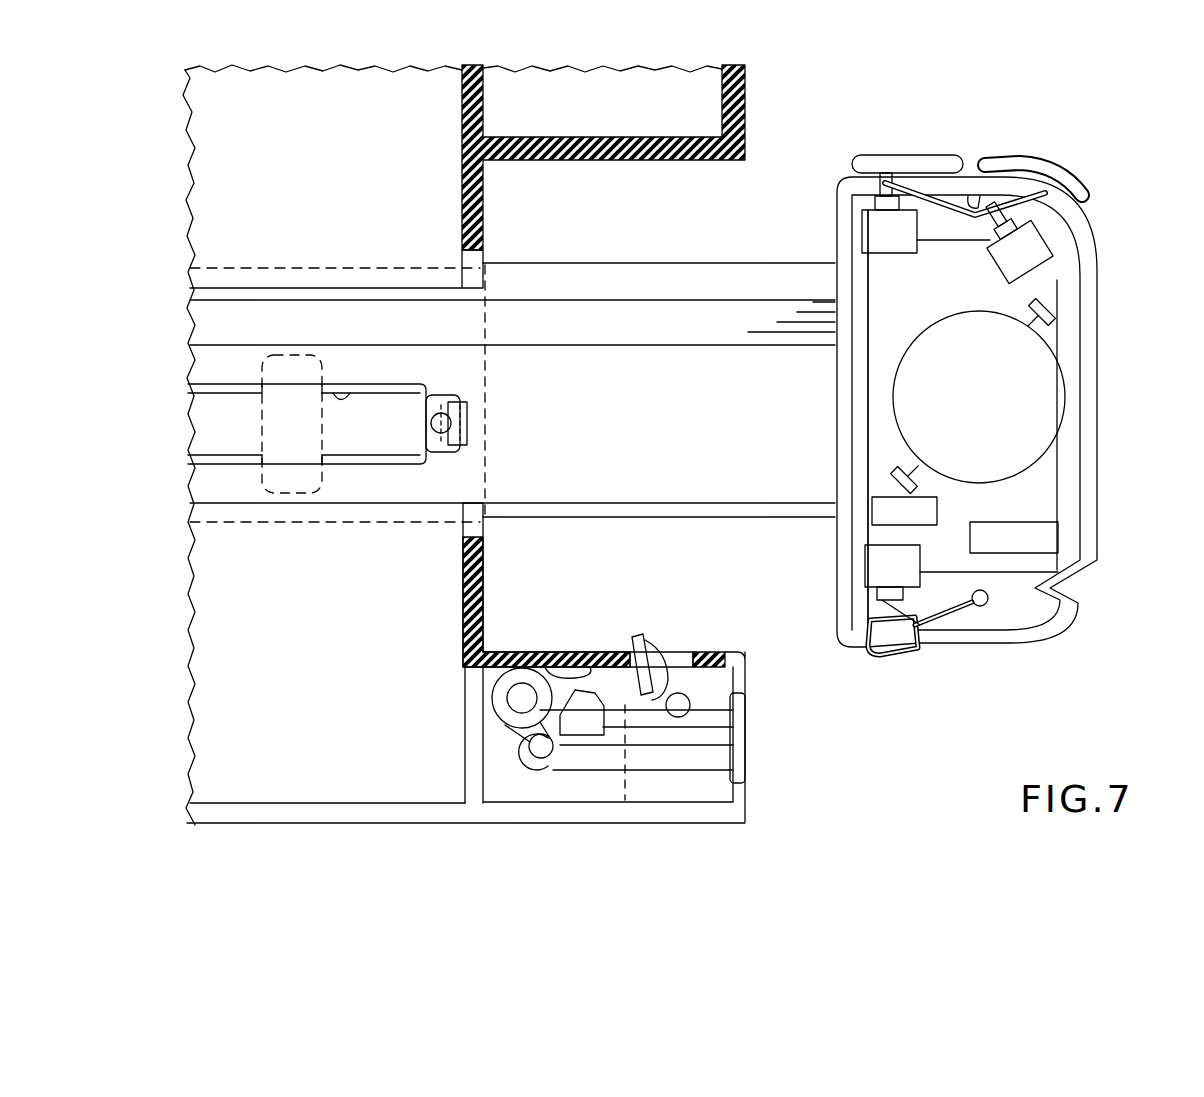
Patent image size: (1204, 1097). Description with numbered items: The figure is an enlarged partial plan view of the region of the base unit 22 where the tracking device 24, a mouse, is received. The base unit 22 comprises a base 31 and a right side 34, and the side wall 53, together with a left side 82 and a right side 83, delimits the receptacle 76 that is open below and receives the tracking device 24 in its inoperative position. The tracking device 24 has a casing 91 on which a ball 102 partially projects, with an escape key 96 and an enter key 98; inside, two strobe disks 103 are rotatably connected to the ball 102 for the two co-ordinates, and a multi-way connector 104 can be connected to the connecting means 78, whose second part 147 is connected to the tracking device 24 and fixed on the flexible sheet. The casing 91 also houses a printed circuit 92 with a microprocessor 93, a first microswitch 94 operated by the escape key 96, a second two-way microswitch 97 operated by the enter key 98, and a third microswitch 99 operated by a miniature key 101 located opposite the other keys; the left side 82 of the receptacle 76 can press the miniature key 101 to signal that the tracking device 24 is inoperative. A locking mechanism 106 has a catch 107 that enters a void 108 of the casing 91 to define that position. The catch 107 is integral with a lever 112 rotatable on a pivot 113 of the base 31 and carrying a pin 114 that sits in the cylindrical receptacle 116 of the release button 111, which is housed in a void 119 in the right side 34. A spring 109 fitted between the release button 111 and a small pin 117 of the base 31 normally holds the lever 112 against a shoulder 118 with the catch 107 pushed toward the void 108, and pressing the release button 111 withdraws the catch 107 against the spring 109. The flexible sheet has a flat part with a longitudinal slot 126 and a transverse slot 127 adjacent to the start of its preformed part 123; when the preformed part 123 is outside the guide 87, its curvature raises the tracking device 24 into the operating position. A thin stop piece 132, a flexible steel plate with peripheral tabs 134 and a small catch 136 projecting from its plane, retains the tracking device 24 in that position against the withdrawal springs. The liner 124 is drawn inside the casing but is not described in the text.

The base unit 22 is at (297, 823).
The tracking device 24 is at (1102, 177).
The base 31 is at (360, 790).
The right side 34 is at (746, 95).
The side wall 53 is at (463, 607).
The receptacle 76 is at (712, 652).
The connecting means 78 is at (238, 300).
The left side 82 is at (568, 652).
The right side 83 is at (612, 160).
The guide 87 is at (379, 504).
The casing 91 is at (1095, 482).
The printed circuit 92 is at (1055, 280).
The microprocessor 93 is at (1060, 536).
The first microswitch 94 is at (880, 230).
The escape key 96 is at (898, 172).
The second two-way microswitch 97 is at (1040, 260).
The enter key 98 is at (1020, 165).
The third microswitch 99 is at (880, 575).
The miniature key 101 is at (920, 655).
The ball 102 is at (1030, 353).
The strobe disks 103 is at (1050, 318).
The multi-way connector 104 is at (875, 506).
The locking mechanism 106 is at (672, 634).
The catch 107 is at (650, 645).
The void 108 is at (975, 655).
The spring 109 is at (670, 787).
The release button 111 is at (737, 745).
The lever 112 is at (505, 748).
The pivot 113 is at (492, 698).
The pin 114 is at (543, 763).
The cylindrical receptacle 116 is at (520, 758).
The small pin 117 is at (692, 708).
The shoulder 118 is at (588, 655).
The void 119 is at (745, 775).
The preformed part 123 is at (727, 500).
The liner 124 is at (852, 380).
The longitudinal slot 126 is at (345, 393).
The transverse slot 127 is at (467, 430).
The stop piece 132 is at (230, 433).
The peripheral tabs 134 is at (292, 355).
The small catch 136 is at (455, 397).
The second part 147 is at (688, 298).